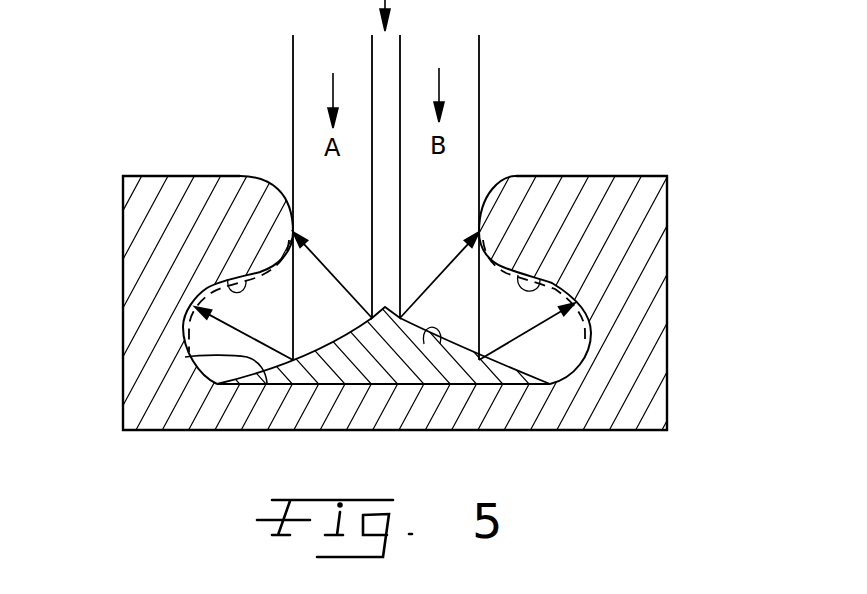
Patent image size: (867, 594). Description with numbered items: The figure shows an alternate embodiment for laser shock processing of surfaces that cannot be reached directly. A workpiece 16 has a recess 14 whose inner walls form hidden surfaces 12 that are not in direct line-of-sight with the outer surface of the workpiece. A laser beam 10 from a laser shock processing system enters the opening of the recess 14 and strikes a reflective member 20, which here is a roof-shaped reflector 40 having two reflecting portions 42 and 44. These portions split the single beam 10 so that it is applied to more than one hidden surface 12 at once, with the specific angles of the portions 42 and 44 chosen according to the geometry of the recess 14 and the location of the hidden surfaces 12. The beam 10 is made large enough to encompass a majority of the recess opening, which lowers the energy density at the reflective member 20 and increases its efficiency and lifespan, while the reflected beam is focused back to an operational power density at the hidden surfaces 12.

The laser beam 10 is at (299, 88).
The hidden surfaces 12 is at (223, 287).
The recess 14 is at (493, 170).
The workpiece 16 is at (657, 412).
The reflective member 20 is at (452, 397).
The roof-shaped reflector 40 is at (313, 370).
The reflecting portion 42 is at (185, 357).
The reflecting portion 44 is at (422, 337).